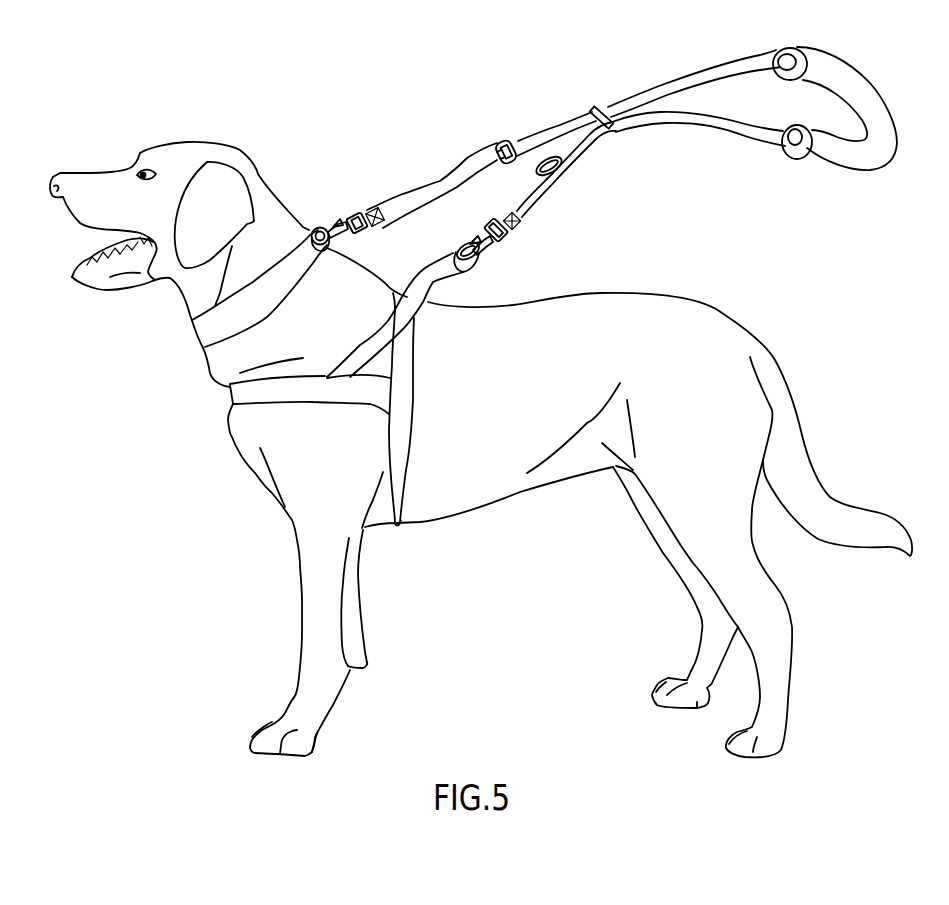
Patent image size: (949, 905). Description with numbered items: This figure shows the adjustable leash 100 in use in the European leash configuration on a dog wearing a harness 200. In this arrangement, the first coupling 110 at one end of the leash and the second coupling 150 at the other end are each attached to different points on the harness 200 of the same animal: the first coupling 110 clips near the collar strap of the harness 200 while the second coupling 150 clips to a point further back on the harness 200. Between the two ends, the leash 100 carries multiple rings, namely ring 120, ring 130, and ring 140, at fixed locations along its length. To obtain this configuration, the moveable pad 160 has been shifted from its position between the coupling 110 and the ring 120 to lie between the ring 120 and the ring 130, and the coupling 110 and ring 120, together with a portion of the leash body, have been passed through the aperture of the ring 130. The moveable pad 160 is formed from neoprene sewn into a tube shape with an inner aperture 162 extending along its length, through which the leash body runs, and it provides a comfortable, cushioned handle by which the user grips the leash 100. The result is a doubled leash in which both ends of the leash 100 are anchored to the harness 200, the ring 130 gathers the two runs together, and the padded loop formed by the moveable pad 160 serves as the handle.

The adjustable leash 100 is at (424, 64).
The first coupling 110 is at (318, 224).
The ring 120 is at (489, 134).
The ring 130 is at (581, 99).
The ring 140 is at (572, 186).
The second coupling 150 is at (491, 263).
The moveable pad 160 is at (893, 112).
The inner aperture 162 is at (782, 151).
The harness 200 is at (253, 390).